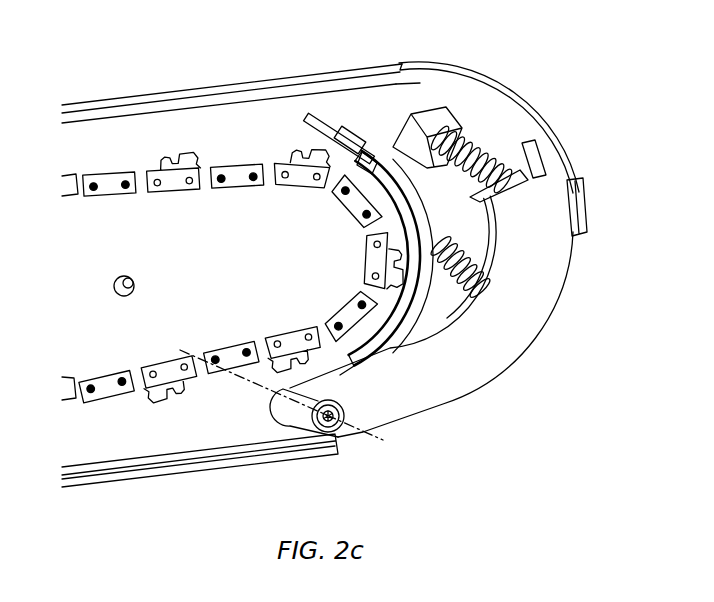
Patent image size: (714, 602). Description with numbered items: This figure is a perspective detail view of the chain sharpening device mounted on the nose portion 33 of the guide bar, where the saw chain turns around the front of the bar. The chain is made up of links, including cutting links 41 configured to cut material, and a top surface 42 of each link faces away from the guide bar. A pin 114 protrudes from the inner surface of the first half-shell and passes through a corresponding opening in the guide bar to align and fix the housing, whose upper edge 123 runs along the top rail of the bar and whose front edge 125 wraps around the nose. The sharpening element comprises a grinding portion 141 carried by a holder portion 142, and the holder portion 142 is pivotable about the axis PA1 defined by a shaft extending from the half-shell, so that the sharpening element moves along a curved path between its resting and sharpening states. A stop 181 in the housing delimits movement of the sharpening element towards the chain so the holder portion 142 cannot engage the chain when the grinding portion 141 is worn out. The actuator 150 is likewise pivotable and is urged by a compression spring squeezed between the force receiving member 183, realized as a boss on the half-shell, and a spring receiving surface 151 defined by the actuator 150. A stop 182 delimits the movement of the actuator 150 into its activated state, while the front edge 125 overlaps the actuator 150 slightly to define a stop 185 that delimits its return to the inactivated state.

The upper edge 123 is at (207, 90).
The nose portion 33 is at (292, 284).
The cutting links 41 is at (174, 183).
The top surface 42 is at (165, 162).
The pin 114 is at (119, 277).
The holder portion 142 is at (367, 151).
The stop 181 is at (311, 117).
The actuator 150 is at (509, 347).
The grinding portion 141 is at (380, 317).
The axis PA1 is at (332, 402).
The force receiving member 183 is at (423, 117).
The spring receiving surface 151 is at (514, 183).
The stop 182 is at (541, 157).
The front edge 125 is at (586, 188).
The stop 185 is at (571, 242).